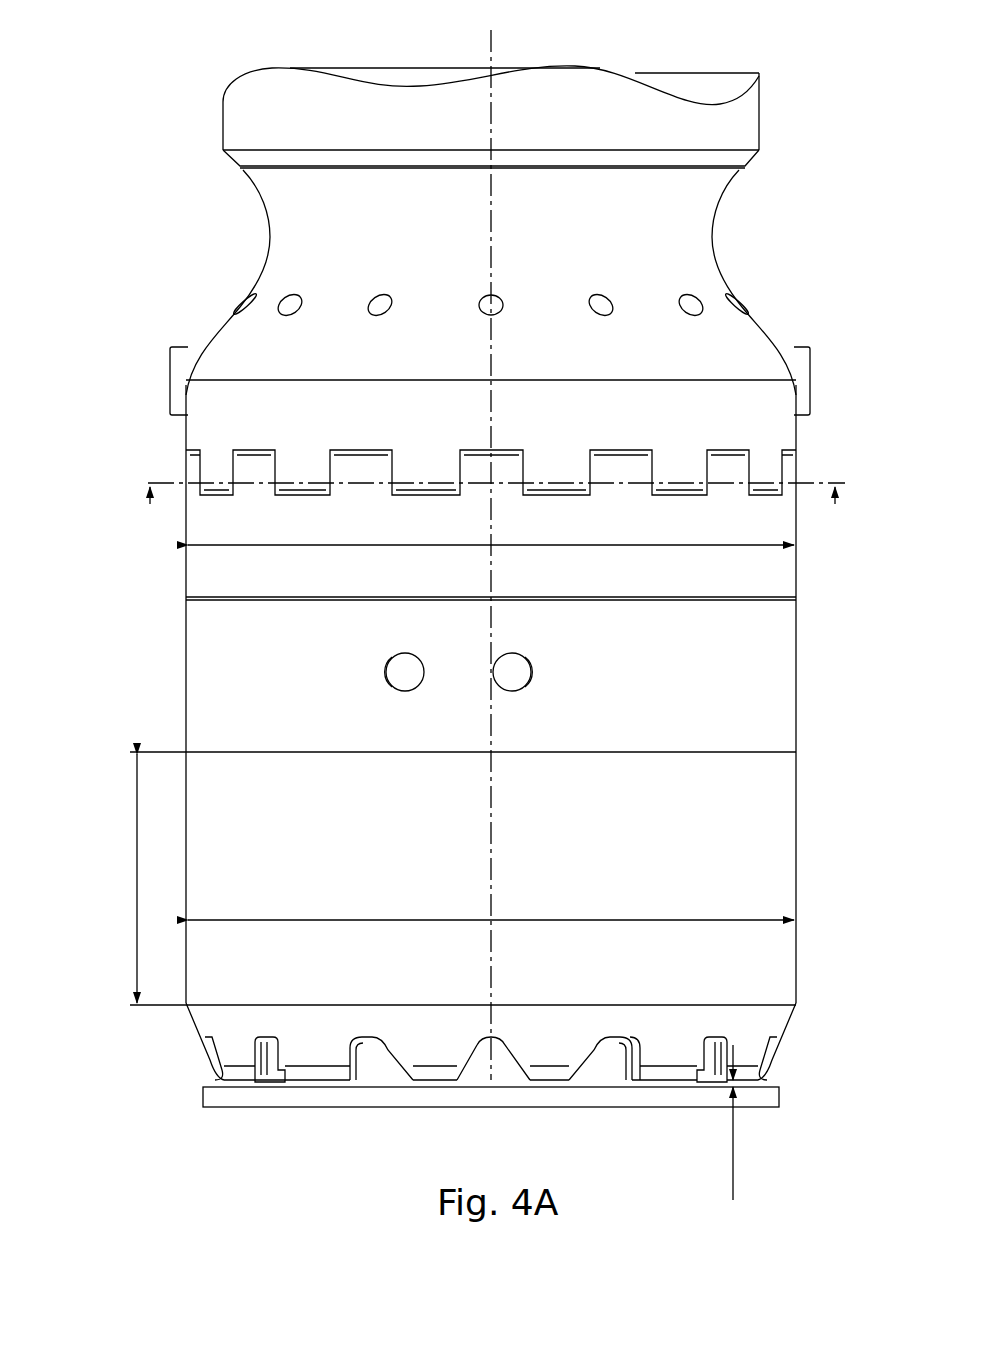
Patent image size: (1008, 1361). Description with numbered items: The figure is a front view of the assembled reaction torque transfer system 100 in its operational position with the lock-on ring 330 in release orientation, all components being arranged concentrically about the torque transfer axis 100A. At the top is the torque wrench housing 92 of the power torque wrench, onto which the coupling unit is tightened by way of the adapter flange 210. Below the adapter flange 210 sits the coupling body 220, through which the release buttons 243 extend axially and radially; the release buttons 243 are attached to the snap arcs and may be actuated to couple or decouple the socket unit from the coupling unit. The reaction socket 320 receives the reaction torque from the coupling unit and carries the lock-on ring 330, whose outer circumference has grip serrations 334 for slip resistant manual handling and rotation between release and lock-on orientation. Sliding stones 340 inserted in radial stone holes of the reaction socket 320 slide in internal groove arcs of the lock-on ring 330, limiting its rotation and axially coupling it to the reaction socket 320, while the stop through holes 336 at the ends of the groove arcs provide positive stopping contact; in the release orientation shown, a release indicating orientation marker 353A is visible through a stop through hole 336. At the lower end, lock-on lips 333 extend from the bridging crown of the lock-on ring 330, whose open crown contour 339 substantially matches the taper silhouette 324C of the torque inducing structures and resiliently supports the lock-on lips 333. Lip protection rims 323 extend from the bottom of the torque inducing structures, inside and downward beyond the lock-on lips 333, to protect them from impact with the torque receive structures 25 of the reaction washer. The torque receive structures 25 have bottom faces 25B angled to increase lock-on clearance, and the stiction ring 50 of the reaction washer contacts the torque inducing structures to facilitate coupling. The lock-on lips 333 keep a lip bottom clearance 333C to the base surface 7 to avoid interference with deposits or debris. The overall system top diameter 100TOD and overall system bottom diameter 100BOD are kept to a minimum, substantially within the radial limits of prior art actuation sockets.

The reaction torque transfer system 100 is at (120, 183).
The torque transfer axis 100A is at (491, 41).
The torque wrench housing 92 is at (753, 118).
The adapter flange 210 is at (270, 237).
The release buttons 243 is at (180, 370).
The coupling body 220 is at (186, 430).
The reaction socket 320 is at (186, 547).
The lock-on ring 330 is at (186, 688).
The release indicating orientation marker 353A is at (403, 672).
The sliding stones 340 is at (513, 672).
The stop through holes 336 is at (420, 686).
The grip serrations 334 is at (122, 878).
The lip protection rims 323 is at (237, 1057).
The taper silhouette 324C is at (263, 1060).
The lock-on lips 333 is at (263, 1073).
The torque receive structures 25 is at (373, 1052).
The bottom faces 25B is at (385, 1068).
The stiction ring 50 is at (502, 1077).
The open crown contour 339 is at (523, 1073).
The base surface 7 is at (770, 1085).
The lip bottom clearance 333C is at (718, 1122).
The overall system top diameter 100TOD is at (491, 530).
The overall system bottom diameter 100BOD is at (491, 905).